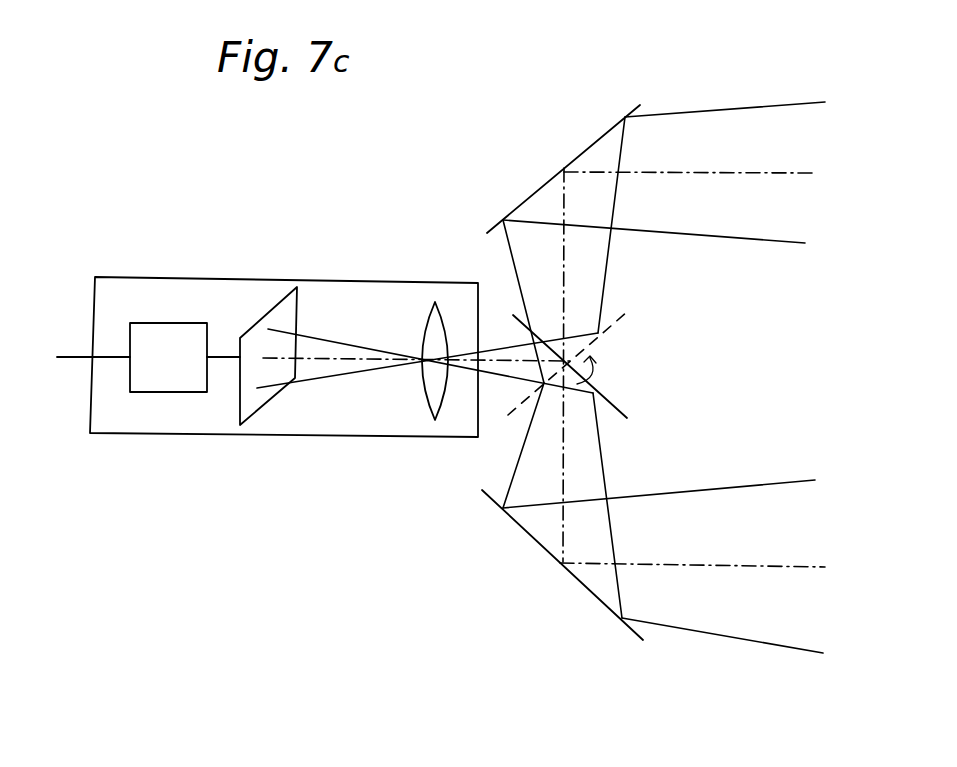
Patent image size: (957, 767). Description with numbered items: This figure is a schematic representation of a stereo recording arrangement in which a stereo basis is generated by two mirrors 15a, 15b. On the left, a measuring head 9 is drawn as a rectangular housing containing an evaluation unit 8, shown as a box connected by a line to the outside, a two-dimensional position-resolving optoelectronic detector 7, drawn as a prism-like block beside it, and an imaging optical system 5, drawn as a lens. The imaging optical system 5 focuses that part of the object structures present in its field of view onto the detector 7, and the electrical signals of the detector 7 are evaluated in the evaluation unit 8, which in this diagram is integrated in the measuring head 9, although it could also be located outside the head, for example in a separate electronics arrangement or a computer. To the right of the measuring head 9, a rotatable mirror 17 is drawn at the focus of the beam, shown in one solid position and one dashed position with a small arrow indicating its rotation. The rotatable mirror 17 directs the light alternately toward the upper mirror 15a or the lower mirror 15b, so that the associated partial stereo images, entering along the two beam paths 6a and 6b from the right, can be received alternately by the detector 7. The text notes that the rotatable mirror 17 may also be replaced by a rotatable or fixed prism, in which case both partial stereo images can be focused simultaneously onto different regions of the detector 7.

The imaging optical system 5 is at (433, 325).
The first output beam 6a is at (743, 176).
The second output beam 6b is at (747, 568).
The two-dimensional position-resolving optoelectronic detector 7 is at (284, 311).
The evaluation unit 8 is at (175, 376).
The measuring head 9 is at (160, 440).
The mirror 15a is at (584, 142).
The mirror 15b is at (582, 592).
The rotatable mirror 17 is at (617, 400).